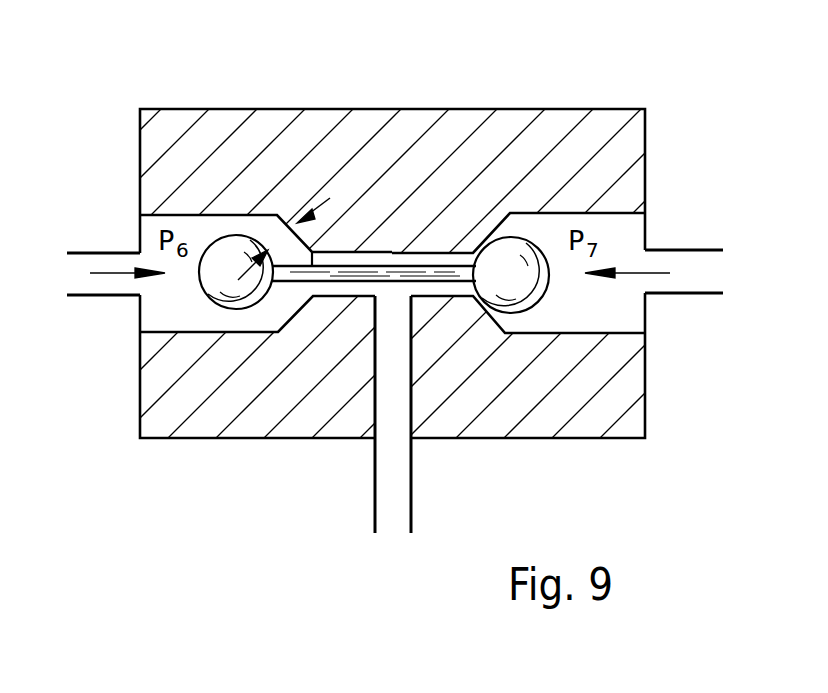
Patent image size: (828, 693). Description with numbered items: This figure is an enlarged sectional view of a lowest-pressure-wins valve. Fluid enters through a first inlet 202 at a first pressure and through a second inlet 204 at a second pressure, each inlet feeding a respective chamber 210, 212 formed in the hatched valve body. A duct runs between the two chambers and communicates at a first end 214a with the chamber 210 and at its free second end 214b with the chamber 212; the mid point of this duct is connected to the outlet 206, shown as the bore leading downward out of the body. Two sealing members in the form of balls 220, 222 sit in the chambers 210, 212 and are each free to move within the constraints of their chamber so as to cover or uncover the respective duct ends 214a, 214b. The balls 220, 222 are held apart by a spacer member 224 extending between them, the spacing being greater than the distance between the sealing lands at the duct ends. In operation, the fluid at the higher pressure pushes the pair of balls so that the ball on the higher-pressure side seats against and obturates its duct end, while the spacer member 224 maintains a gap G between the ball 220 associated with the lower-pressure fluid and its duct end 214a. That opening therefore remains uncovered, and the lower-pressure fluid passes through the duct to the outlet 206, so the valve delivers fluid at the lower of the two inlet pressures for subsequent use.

The chamber 210 is at (202, 227).
The chamber 212 is at (607, 222).
The first inlet 202 is at (100, 298).
The second inlet 204 is at (692, 297).
The ball 220 is at (223, 288).
The ball 222 is at (522, 283).
The spacer member 224 is at (335, 282).
The first end of duct 214a is at (312, 289).
The second end of duct 214b is at (480, 292).
The outlet 206 is at (375, 505).
The gap G is at (280, 238).